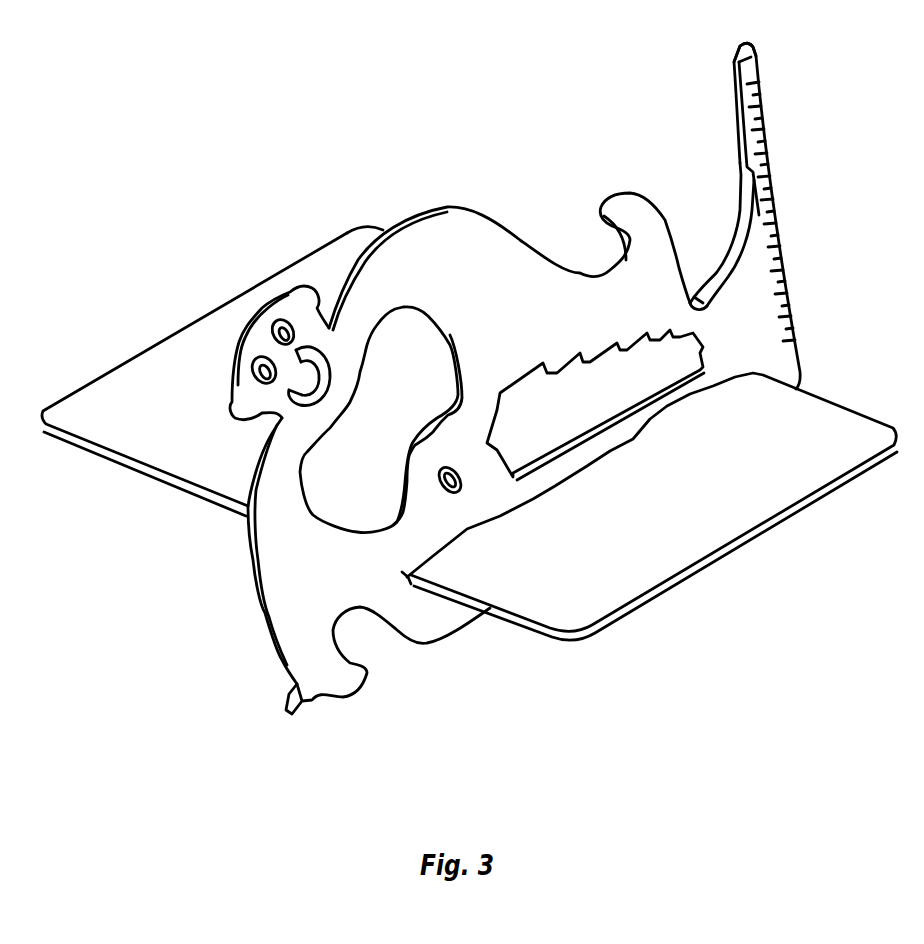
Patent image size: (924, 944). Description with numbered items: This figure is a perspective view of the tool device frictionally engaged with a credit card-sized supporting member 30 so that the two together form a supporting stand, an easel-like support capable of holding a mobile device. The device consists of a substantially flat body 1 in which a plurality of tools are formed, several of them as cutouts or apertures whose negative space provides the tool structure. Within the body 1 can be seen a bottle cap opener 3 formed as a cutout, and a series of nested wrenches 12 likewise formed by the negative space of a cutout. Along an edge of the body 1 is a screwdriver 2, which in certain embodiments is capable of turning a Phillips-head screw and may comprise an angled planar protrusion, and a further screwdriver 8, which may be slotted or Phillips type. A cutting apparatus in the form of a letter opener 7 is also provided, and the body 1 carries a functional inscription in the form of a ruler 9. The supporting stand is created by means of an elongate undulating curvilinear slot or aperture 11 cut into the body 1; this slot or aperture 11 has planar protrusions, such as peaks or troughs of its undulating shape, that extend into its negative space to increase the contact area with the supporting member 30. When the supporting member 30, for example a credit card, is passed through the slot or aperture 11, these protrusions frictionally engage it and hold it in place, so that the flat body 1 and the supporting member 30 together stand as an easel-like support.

The body 1 is at (504, 430).
The screwdriver 2 is at (289, 717).
The bottle cap opener 3 is at (323, 495).
The letter opener 7 is at (723, 260).
The screwdriver 8 is at (755, 52).
The ruler 9 is at (781, 203).
The elongate undulating curvilinear slot or aperture 11 is at (410, 590).
The nested wrenches 12 is at (517, 453).
The supporting member 30 is at (680, 515).